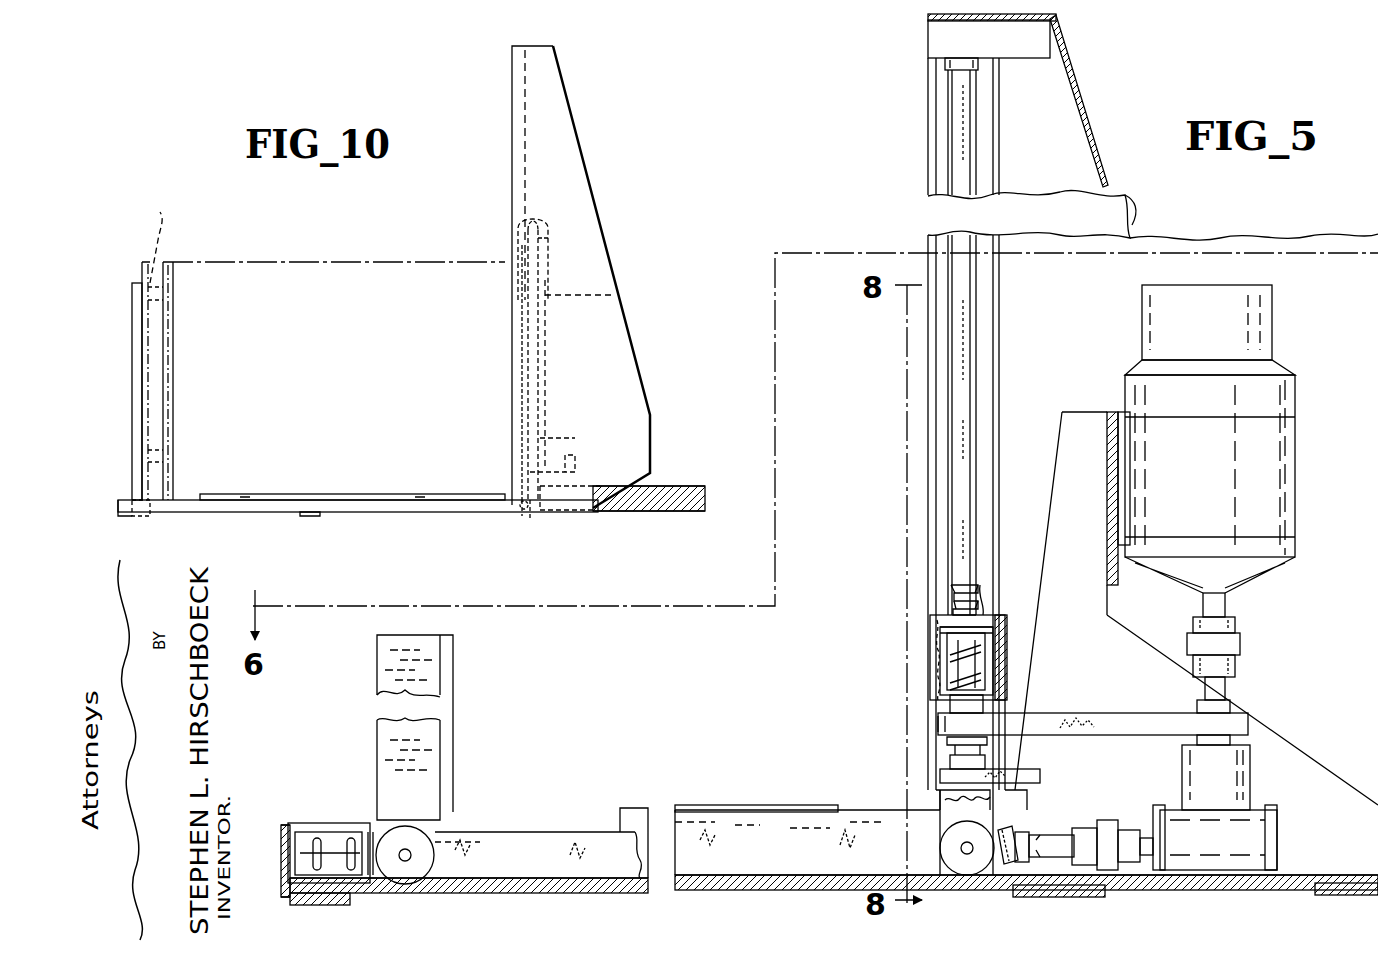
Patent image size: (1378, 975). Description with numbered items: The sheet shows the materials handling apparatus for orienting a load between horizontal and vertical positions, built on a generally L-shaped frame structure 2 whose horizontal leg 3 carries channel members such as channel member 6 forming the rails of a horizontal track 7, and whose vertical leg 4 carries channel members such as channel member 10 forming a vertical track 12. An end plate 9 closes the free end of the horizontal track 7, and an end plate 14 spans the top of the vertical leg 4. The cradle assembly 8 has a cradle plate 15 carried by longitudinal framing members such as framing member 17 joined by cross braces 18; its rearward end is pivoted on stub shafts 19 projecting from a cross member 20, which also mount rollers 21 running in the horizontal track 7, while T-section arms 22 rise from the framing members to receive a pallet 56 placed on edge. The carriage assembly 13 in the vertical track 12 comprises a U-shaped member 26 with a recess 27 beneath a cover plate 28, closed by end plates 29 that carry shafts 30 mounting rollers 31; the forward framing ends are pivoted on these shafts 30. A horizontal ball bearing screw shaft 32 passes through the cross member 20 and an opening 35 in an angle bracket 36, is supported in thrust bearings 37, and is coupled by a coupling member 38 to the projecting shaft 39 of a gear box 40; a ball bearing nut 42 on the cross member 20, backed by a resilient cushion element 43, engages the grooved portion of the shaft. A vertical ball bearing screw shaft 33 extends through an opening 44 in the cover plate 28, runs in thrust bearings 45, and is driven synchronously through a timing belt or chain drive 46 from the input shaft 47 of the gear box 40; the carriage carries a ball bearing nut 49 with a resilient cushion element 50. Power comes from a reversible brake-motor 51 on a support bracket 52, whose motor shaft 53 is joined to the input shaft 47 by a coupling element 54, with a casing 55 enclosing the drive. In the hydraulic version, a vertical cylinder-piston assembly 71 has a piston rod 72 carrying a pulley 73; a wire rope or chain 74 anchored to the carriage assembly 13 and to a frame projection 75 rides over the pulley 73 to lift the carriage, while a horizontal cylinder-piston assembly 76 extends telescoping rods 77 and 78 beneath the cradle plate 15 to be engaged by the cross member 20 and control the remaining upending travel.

In FIG. 10, the frame structure 2 is at (652, 432).
In FIG. 10, the horizontal leg 3 is at (360, 514).
In FIG. 10, the vertical leg 4 is at (553, 46).
In FIG. 10, the channel member 6 is at (442, 513).
In FIG. 5, the horizontal track 7 is at (458, 878).
In FIG. 10, the cradle assembly 8 is at (290, 498).
In FIG. 5, the cradle assembly 8 is at (850, 808).
In FIG. 5, the end plate 9 is at (284, 868).
In FIG. 5, the channel member 10 is at (930, 140).
In FIG. 10, the vertical track 12 is at (512, 105).
In FIG. 5, the vertical track 12 is at (940, 97).
In FIG. 5, the carriage assembly 13 is at (928, 616).
In FIG. 5, the end plate 14 is at (930, 35).
In FIG. 10, the cradle plate 15 is at (385, 494).
In FIG. 5, the cradle plate 15 is at (745, 805).
In FIG. 10, the framing member 17 is at (330, 268).
In FIG. 5, the framing member 17 is at (600, 832).
In FIG. 5, the cross brace 18 is at (780, 828).
In FIG. 5, the stub shaft 19 is at (412, 850).
In FIG. 10, the cross member 20 is at (150, 514).
In FIG. 5, the cross member 20 is at (470, 845).
In FIG. 10, the roller 21 is at (134, 520).
In FIG. 5, the roller 21 is at (405, 826).
In FIG. 10, the T-section arm 22 is at (132, 350).
In FIG. 5, the T-section arm 22 is at (377, 695).
In FIG. 5, the U-shaped member 26 is at (1005, 660).
In FIG. 5, the recess 27 is at (995, 680).
In FIG. 5, the cover plate 28 is at (985, 610).
In FIG. 5, the end plate 29 is at (935, 660).
In FIG. 5, the shaft 30 is at (966, 855).
In FIG. 5, the roller 31 is at (940, 848).
In FIG. 5, the horizontal ball bearing screw shaft 32 is at (1003, 862).
In FIG. 5, the vertical ball bearing screw shaft 33 is at (958, 195).
In FIG. 5, the opening 35 is at (1042, 834).
In FIG. 5, the angle bracket 36 is at (1030, 770).
In FIG. 5, the thrust bearing 37 is at (1022, 862).
In FIG. 5, the coupling member 38 is at (1108, 820).
In FIG. 5, the projecting shaft 39 is at (1140, 838).
In FIG. 5, the gear box 40 is at (1225, 846).
In FIG. 5, the ball bearing nut 42 is at (335, 830).
In FIG. 5, the resilient cushion element 43 is at (378, 880).
In FIG. 5, the opening 44 is at (983, 615).
In FIG. 5, the thrust bearing 45 is at (945, 63).
In FIG. 5, the timing belt or chain drive 46 is at (1143, 713).
In FIG. 5, the input shaft 47 is at (1228, 688).
In FIG. 5, the ball bearing nut 49 is at (945, 690).
In FIG. 5, the resilient cushion element 50 is at (948, 628).
In FIG. 5, the reversible brake-motor 51 is at (1290, 437).
In FIG. 5, the support bracket 52 is at (1110, 412).
In FIG. 5, the motor shaft 53 is at (1226, 605).
In FIG. 5, the coupling element 54 is at (1240, 643).
In FIG. 10, the casing 55 is at (622, 330).
In FIG. 5, the casing 55 is at (1112, 195).
In FIG. 10, the pallet 56 is at (150, 240).
In FIG. 10, the hydraulic cylinder-piston assembly 71 is at (565, 449).
In FIG. 10, the piston rod 72 is at (545, 240).
In FIG. 10, the pulley 73 is at (525, 213).
In FIG. 10, the wire rope or chain 74 is at (522, 248).
In FIG. 10, the frame projection 75 is at (588, 295).
In FIG. 10, the cylinder-piston assembly 76 is at (690, 487).
In FIG. 10, the rod 77 is at (526, 520).
In FIG. 10, the rod 78 is at (540, 514).